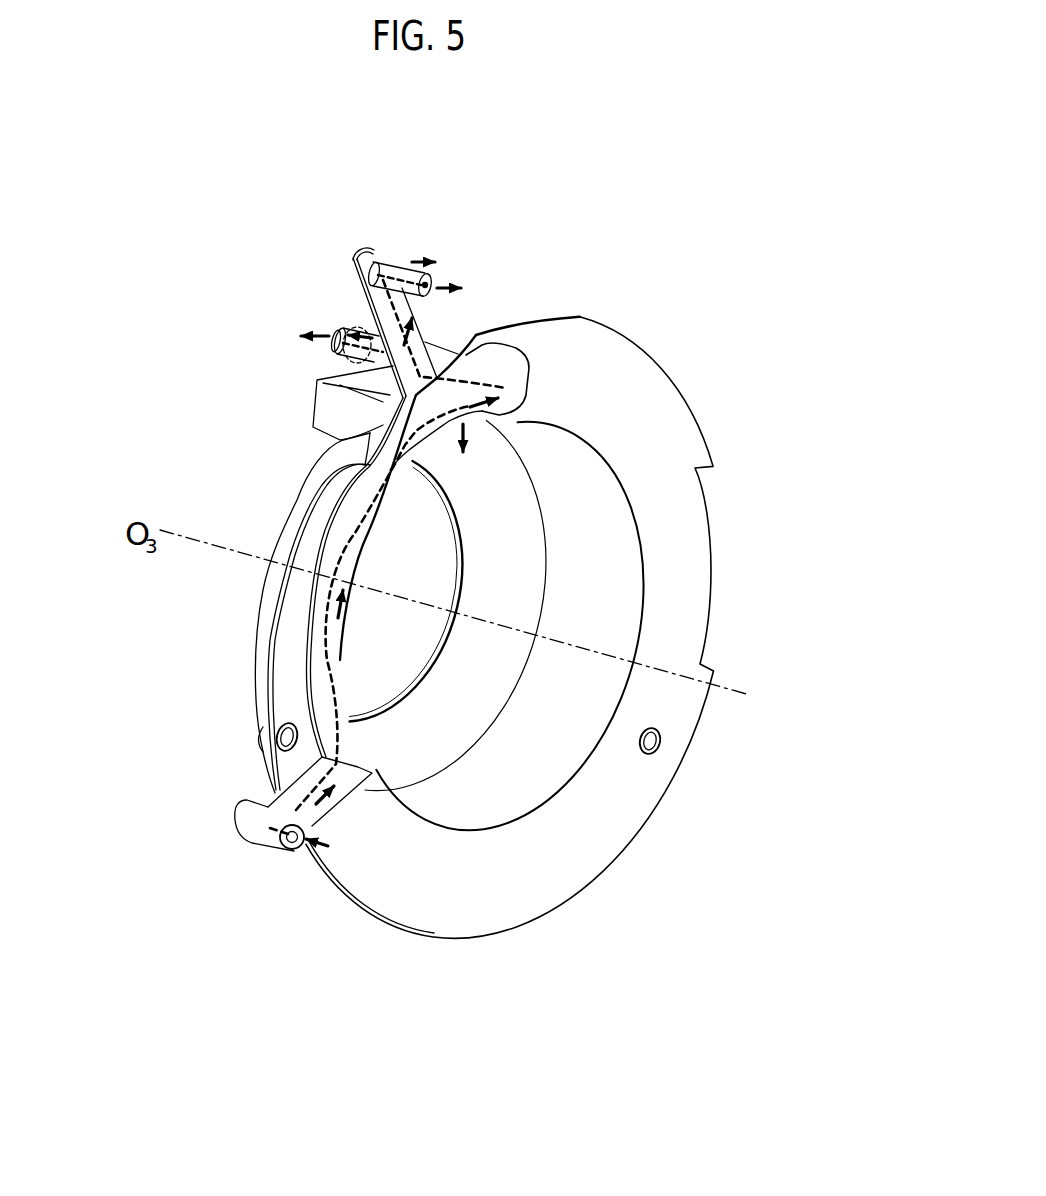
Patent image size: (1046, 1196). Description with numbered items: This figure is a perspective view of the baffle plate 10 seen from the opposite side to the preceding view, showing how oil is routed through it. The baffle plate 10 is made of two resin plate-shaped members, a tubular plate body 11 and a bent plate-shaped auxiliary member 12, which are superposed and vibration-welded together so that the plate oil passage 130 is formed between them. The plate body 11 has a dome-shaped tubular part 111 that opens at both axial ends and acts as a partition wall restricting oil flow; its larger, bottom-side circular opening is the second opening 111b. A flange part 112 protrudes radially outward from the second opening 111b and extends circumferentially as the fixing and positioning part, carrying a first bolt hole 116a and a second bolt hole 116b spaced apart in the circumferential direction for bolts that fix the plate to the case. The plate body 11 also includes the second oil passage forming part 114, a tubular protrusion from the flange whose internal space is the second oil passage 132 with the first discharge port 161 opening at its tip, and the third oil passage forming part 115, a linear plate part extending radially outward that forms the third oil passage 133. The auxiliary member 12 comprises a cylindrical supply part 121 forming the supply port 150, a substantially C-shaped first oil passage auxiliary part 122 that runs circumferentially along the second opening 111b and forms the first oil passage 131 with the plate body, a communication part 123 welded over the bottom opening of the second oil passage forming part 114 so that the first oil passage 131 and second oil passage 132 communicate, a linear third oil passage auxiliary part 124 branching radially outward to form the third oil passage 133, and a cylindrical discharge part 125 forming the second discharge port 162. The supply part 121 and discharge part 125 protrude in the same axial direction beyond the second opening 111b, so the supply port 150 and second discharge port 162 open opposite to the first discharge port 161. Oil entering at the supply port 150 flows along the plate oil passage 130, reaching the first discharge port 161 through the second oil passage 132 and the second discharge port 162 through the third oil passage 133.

The baffle plate 10 is at (477, 625).
The plate body 11 is at (666, 369).
The auxiliary member 12 is at (384, 515).
The tubular part 111 is at (464, 803).
The second opening 111b is at (645, 580).
The flange part 112 is at (430, 920).
The second oil passage forming part 114 is at (459, 360).
The third oil passage forming part 115 is at (355, 258).
The first bolt hole 116a is at (277, 735).
The second bolt hole 116b is at (661, 745).
The supply part 121 is at (266, 842).
The first oil passage auxiliary part 122 is at (336, 670).
The communication part 123 is at (518, 370).
The third oil passage auxiliary part 124 is at (385, 303).
The discharge part 125 is at (428, 253).
The plate oil passage 130 is at (365, 566).
The first oil passage 131 is at (327, 700).
The second oil passage 132 is at (310, 333).
The third oil passage 133 is at (372, 307).
The supply port 150 is at (288, 853).
The first discharge port 161 is at (340, 332).
The second discharge port 162 is at (432, 277).